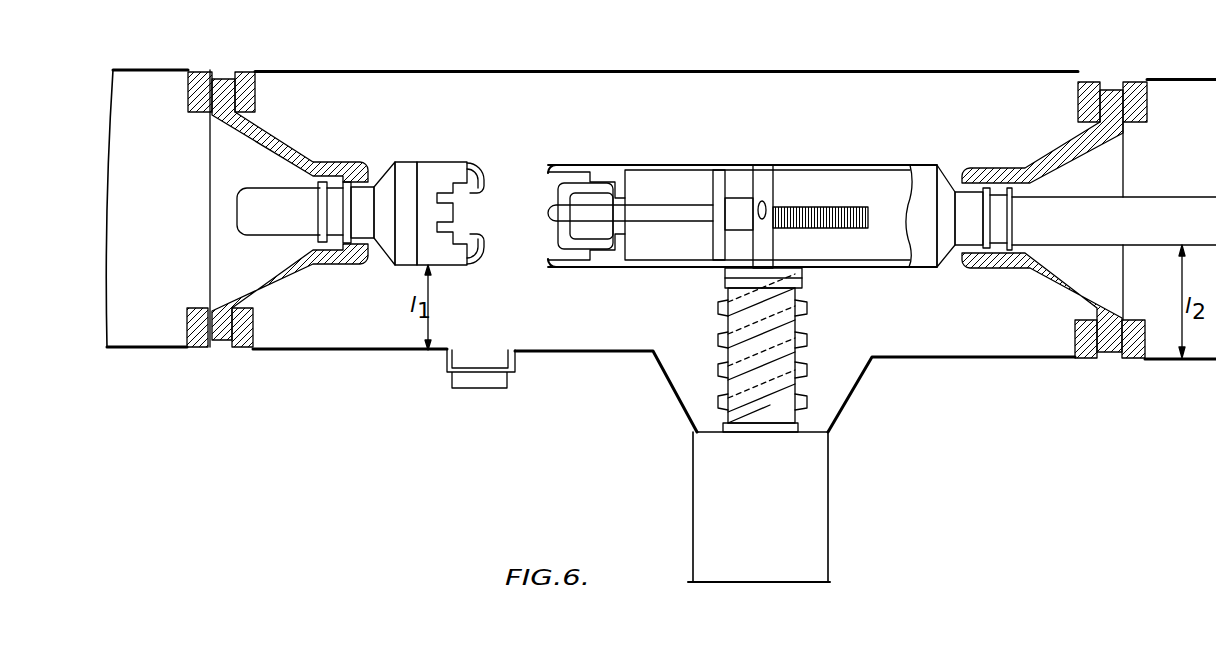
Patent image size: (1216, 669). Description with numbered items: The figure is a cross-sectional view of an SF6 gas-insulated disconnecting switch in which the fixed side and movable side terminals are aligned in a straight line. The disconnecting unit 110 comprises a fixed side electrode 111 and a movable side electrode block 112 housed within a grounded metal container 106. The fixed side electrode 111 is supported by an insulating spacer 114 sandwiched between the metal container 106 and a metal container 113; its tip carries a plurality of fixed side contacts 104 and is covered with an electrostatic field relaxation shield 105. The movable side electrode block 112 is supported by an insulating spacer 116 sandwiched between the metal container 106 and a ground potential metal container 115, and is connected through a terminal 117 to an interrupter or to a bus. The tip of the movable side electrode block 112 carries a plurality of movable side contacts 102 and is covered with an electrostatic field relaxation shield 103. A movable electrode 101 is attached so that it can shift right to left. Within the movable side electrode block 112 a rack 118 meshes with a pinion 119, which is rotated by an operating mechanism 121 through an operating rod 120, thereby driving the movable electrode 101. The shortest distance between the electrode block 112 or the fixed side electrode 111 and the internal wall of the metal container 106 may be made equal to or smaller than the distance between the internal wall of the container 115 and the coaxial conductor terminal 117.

The movable electrode 101 is at (548, 210).
The movable side contacts 102 is at (570, 243).
The electrostatic field relaxation shield 103 is at (553, 170).
The fixed side contacts 104 is at (484, 222).
The electrostatic field relaxation shield 105 is at (497, 182).
The metal container 106 is at (740, 75).
The disconnecting unit 110 is at (532, 335).
The fixed side electrode 111 is at (452, 265).
The movable side electrode block 112 is at (703, 163).
The metal container 113 is at (162, 70).
The insulating spacer 114 is at (223, 78).
The metal container 115 is at (1185, 80).
The insulating spacer 116 is at (1108, 83).
The terminal 117 is at (1147, 197).
The rack 118 is at (842, 217).
The pinion 119 is at (780, 215).
The operating rod 120 is at (790, 322).
The operating mechanism 121 is at (830, 480).